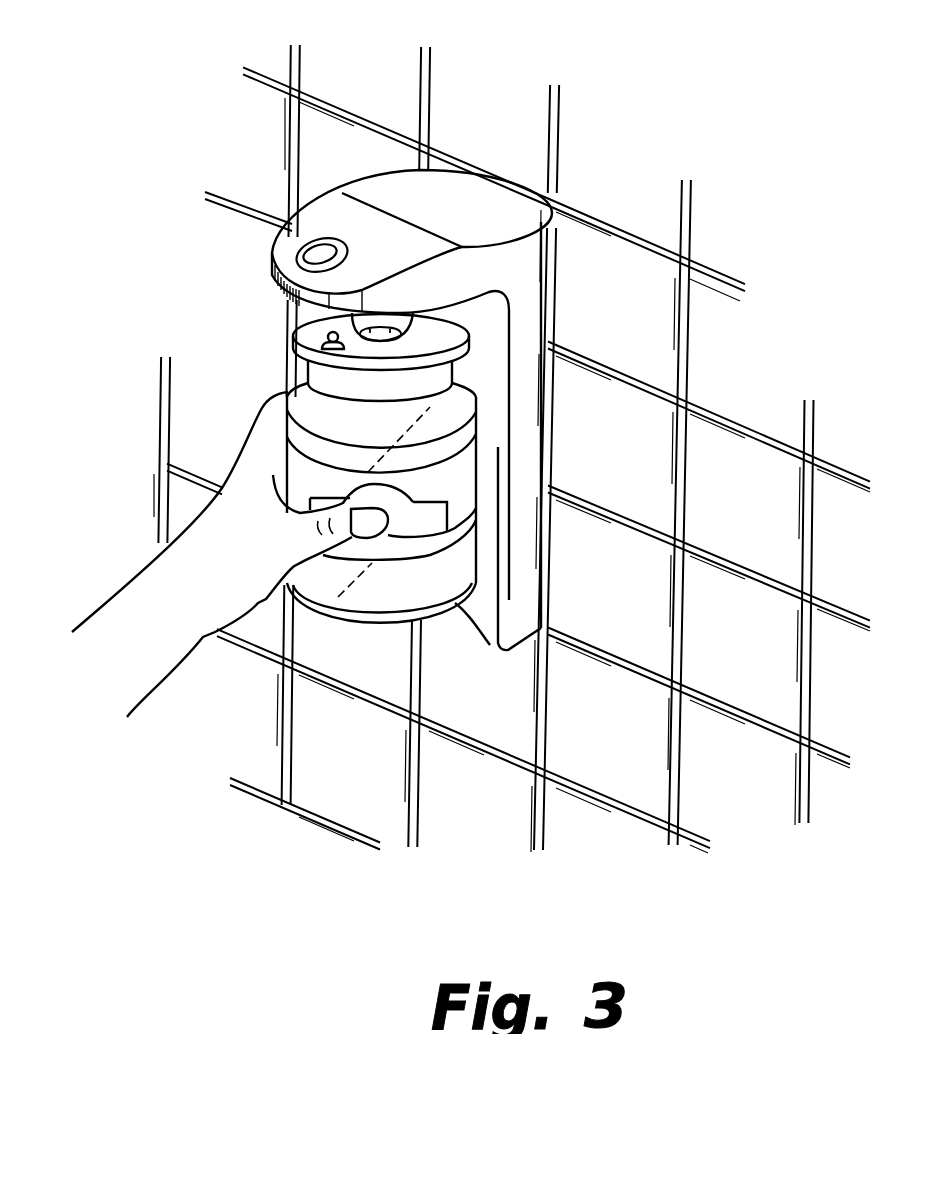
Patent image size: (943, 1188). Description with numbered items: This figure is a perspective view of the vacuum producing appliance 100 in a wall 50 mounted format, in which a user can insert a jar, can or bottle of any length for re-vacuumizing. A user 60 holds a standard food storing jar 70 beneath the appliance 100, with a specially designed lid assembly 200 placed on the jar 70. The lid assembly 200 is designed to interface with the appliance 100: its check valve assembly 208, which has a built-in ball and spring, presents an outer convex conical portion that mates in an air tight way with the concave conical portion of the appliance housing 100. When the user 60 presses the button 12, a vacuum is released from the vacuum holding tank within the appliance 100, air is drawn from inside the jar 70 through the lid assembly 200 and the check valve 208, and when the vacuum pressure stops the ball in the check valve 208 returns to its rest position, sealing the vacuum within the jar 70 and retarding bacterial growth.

The button 12 is at (320, 254).
The wall 50 is at (744, 648).
The user 60 is at (217, 528).
The jar 70 is at (308, 410).
The vacuum producing appliance 100 is at (582, 184).
The lid assembly 200 is at (358, 316).
The check valve assembly 208 is at (446, 307).